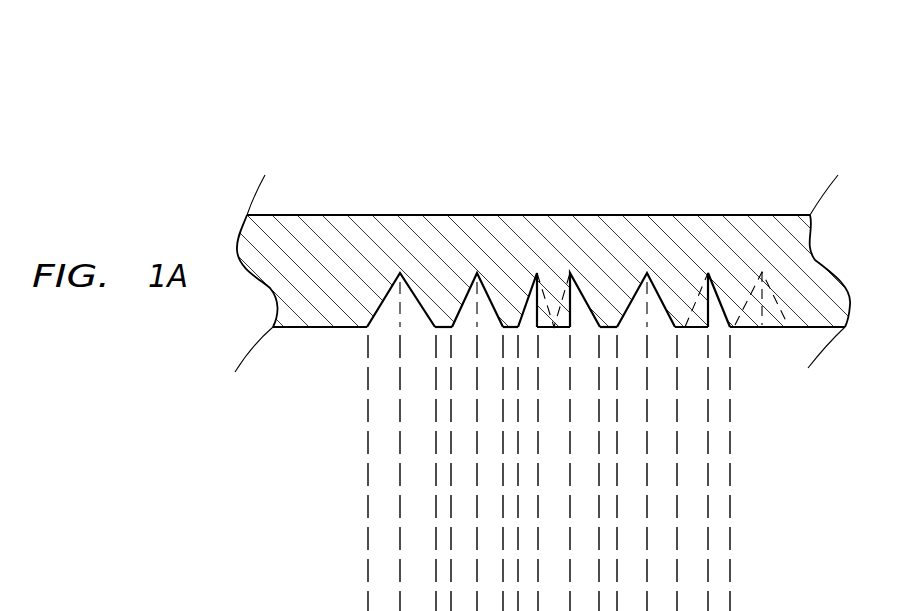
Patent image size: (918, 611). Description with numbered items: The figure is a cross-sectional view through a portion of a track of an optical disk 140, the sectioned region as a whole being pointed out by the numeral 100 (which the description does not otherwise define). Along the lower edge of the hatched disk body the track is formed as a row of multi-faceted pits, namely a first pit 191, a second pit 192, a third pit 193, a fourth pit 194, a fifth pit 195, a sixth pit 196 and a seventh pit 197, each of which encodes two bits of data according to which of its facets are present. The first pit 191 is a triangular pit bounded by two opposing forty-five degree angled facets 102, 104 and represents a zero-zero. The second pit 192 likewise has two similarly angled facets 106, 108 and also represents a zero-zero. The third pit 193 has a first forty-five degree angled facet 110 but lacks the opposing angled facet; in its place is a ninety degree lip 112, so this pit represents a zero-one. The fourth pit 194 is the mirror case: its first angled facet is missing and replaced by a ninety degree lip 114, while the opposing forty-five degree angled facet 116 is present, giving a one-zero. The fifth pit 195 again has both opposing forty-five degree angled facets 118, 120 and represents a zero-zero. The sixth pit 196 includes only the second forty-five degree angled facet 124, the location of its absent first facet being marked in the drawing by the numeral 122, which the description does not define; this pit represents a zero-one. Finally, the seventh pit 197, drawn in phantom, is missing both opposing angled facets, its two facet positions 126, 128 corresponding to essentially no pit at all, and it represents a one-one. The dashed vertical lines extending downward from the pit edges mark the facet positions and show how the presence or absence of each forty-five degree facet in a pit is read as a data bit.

The threaded member / toothed body 100 is at (746, 381).
The optical disk 140 is at (318, 278).
The 45° angled facet 102 is at (377, 302).
The 45° angled facet 104 is at (418, 300).
The angled facet 106 is at (452, 298).
The angled facet 108 is at (491, 307).
The first 45° angled facet 110 is at (521, 298).
The 90° lip 112 is at (556, 298).
The 90° lip 114 is at (564, 295).
The second 45° angled facet 116 is at (587, 300).
The 45° angled facet 118 is at (615, 302).
The 45° angled facet 120 is at (660, 297).
The fifth groove 122 is at (682, 303).
The second 45° angled facet 124 is at (720, 292).
The facet 126 is at (743, 302).
The facet 128 is at (785, 300).
The first pit 191 is at (401, 86).
The second pit 192 is at (477, 86).
The third pit 193 is at (533, 86).
The fourth pit 194 is at (574, 86).
The fifth pit 195 is at (646, 86).
The sixth pit 196 is at (709, 86).
The seventh pit 197 is at (765, 86).